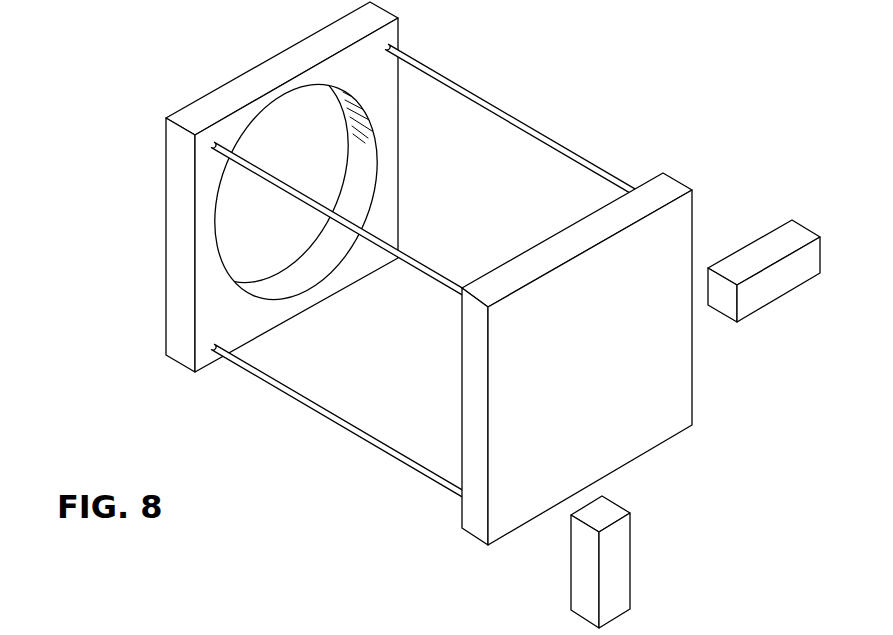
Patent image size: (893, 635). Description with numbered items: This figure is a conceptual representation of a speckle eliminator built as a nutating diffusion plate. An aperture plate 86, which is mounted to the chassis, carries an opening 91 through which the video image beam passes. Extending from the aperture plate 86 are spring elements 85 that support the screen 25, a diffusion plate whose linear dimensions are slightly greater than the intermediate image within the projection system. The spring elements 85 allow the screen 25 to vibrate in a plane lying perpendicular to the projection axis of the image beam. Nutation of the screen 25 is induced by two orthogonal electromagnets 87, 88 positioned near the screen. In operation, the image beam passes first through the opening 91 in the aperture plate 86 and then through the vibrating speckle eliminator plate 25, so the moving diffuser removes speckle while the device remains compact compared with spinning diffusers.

The aperture plate 86 is at (300, 43).
The opening 91 is at (233, 240).
The spring elements 85 is at (513, 114).
The screen 25 is at (693, 398).
The electromagnet 87 is at (766, 237).
The electromagnet 88 is at (631, 551).